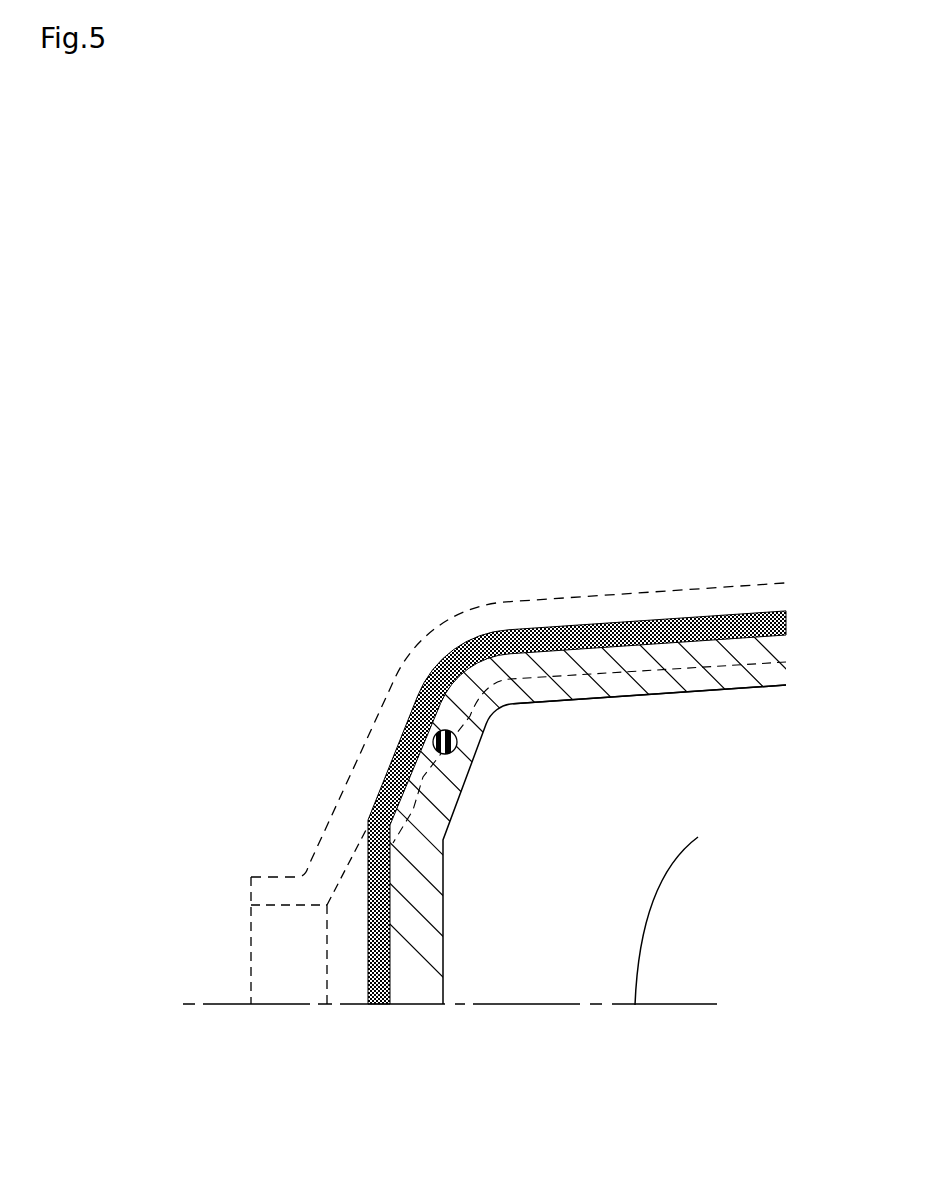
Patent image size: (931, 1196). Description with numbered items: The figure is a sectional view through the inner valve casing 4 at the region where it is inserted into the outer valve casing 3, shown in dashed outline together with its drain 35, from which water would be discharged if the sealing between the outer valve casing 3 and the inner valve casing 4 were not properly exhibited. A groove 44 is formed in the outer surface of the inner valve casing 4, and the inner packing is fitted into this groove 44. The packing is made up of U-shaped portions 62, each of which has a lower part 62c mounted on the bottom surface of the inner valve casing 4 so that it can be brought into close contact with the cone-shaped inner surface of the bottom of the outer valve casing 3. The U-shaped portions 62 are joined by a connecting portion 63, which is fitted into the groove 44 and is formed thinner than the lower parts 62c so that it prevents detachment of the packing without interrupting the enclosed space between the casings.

The outer valve casing 3 is at (650, 587).
The drain 35 is at (267, 876).
The U-shaped portion 62 is at (580, 623).
The lower part 62c is at (369, 957).
The inner valve casing 4 is at (430, 1005).
The groove 44 is at (720, 663).
The connecting portion 63 is at (457, 743).